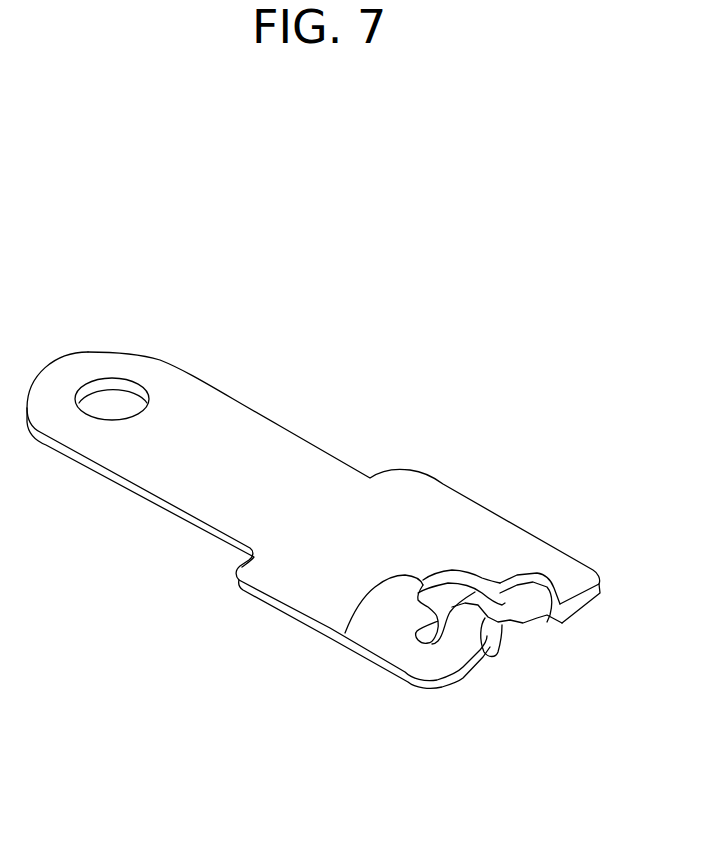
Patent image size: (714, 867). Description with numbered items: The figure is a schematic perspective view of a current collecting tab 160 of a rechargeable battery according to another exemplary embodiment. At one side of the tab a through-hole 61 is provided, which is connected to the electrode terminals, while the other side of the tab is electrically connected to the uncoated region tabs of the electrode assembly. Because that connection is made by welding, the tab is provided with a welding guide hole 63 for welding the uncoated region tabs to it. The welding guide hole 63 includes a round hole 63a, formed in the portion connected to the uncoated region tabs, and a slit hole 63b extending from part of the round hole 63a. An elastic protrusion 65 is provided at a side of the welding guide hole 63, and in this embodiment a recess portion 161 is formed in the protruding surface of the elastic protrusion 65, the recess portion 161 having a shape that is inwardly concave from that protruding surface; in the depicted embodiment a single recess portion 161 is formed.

The current collecting tab 160 is at (427, 392).
The through-hole 61 is at (105, 383).
The welding guide hole 63 is at (393, 658).
The round hole 63a is at (345, 633).
The slit hole 63b is at (421, 627).
The elastic protrusion 65 is at (485, 613).
The recess portion 161 is at (548, 630).